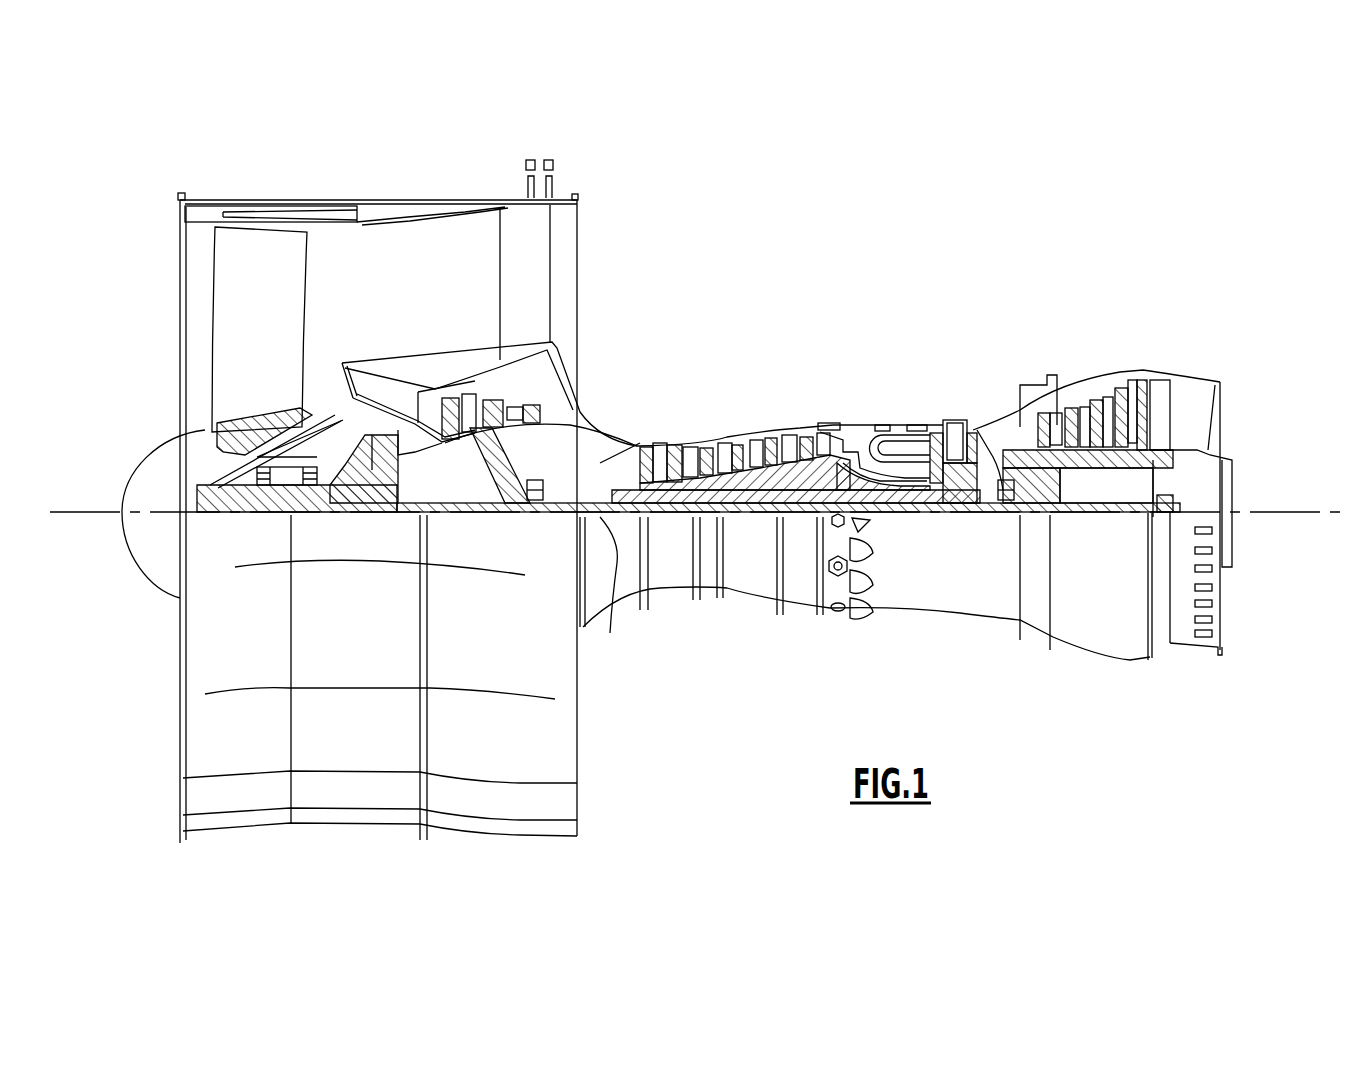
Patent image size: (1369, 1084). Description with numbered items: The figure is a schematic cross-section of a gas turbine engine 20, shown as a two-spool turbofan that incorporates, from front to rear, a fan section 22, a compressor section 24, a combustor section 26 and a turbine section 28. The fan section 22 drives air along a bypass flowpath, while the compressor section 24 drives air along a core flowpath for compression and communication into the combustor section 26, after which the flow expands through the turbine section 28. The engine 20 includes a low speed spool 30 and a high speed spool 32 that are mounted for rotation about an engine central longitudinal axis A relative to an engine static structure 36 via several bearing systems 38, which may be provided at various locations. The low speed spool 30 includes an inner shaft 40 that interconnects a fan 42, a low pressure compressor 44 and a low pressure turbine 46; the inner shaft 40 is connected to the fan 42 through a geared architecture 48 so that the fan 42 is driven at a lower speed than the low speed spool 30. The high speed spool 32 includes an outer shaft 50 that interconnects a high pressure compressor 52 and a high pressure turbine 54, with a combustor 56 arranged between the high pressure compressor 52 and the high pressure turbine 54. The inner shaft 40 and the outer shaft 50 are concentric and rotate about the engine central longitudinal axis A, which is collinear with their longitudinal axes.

The gas turbine engine 20 is at (910, 243).
The fan section 22 is at (302, 190).
The compressor section 24 is at (635, 412).
The combustor section 26 is at (881, 395).
The turbine section 28 is at (1043, 362).
The low speed spool 30 is at (753, 522).
The high speed spool 32 is at (797, 478).
The engine static structure 36 is at (797, 613).
The bearing systems 38 is at (542, 500).
The inner shaft 40 is at (610, 620).
The fan 42 is at (270, 342).
The low pressure compressor 44 is at (510, 405).
The low pressure turbine 46 is at (1093, 395).
The geared architecture 48 is at (389, 494).
The outer shaft 50 is at (890, 497).
The high pressure compressor 52 is at (718, 475).
The high pressure turbine 54 is at (952, 430).
The combustor 56 is at (880, 448).
The engine central longitudinal axis A is at (1320, 512).